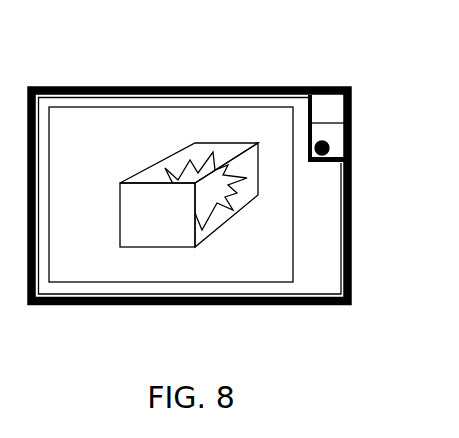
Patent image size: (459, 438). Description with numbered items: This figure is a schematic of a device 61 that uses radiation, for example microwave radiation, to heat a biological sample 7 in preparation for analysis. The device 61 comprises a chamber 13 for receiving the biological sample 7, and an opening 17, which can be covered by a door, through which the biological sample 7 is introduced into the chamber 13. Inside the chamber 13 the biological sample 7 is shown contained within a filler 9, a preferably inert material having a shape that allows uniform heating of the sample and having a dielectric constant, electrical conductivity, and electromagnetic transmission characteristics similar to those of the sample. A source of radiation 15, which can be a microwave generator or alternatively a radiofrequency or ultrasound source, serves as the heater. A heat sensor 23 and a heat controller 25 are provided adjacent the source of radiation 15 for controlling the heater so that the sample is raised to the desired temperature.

The device 61 is at (85, 70).
The opening 17 is at (85, 142).
The chamber 13 is at (190, 196).
The source of radiation 15 is at (328, 103).
The heat controller 25 is at (342, 128).
The heat sensor 23 is at (330, 150).
The filler 9 is at (138, 228).
The biological sample 7 is at (207, 195).